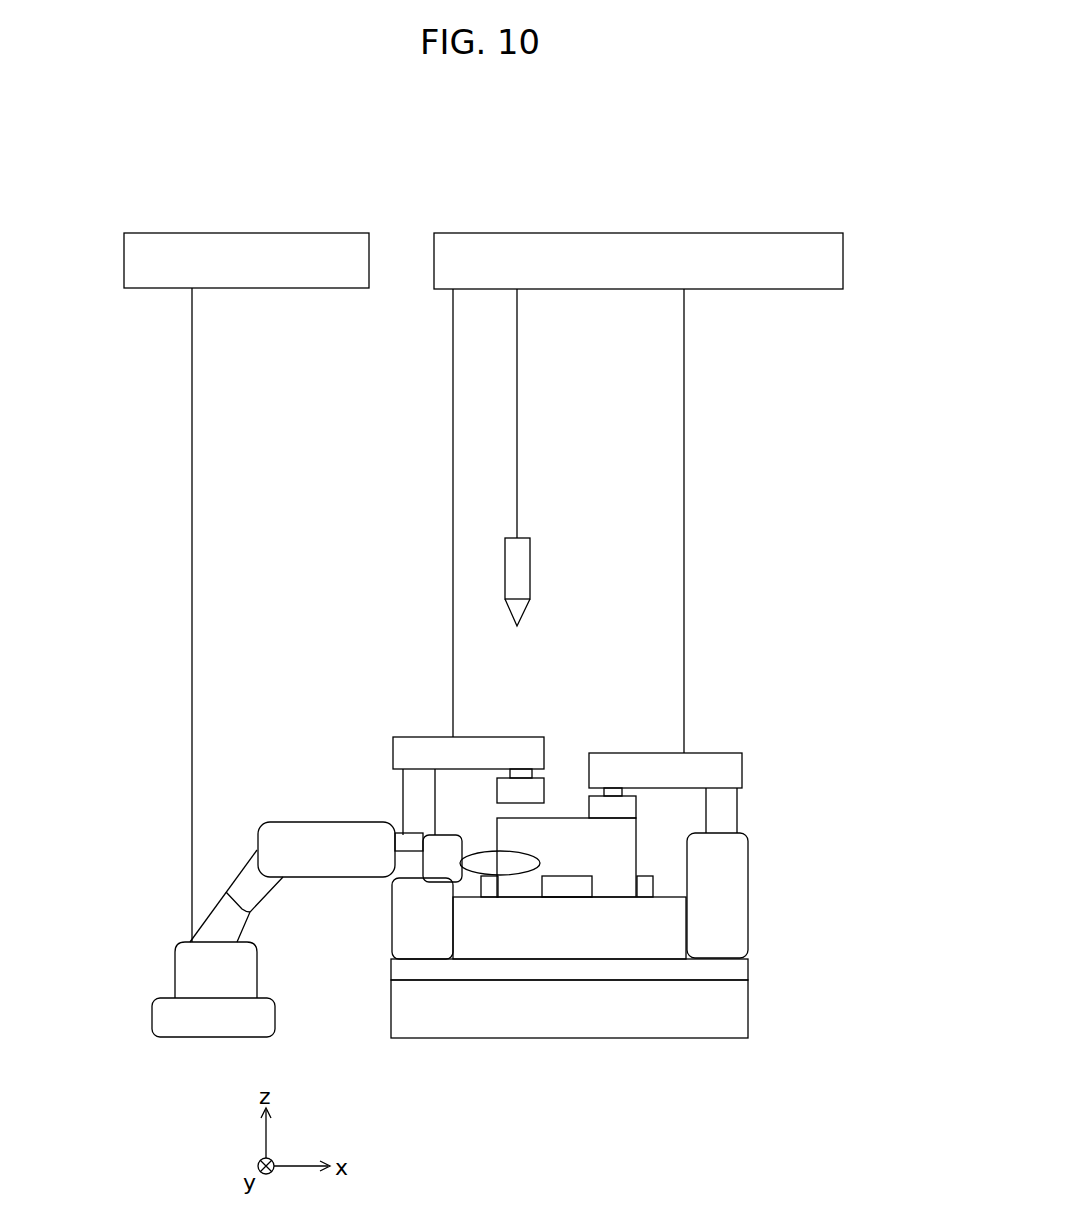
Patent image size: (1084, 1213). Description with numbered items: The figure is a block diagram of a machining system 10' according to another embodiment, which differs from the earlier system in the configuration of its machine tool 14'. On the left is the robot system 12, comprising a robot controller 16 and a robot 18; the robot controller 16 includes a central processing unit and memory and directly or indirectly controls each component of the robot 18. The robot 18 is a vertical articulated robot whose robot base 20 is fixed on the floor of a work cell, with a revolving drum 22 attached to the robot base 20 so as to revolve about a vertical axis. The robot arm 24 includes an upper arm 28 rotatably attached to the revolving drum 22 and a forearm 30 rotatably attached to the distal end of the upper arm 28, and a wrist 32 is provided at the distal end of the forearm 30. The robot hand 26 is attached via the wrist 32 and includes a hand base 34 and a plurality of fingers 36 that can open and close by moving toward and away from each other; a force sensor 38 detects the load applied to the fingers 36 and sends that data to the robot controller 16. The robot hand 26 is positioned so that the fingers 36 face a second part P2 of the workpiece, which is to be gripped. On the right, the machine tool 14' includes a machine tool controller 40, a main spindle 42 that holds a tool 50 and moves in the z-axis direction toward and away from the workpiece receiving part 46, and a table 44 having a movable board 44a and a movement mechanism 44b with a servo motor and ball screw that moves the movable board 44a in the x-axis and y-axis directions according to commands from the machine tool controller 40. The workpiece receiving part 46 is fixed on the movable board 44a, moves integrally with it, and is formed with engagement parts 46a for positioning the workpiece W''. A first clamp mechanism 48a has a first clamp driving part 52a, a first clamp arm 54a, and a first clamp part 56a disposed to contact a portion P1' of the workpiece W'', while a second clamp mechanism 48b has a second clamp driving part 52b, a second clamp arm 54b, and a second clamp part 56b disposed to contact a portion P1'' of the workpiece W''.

The machining system 10' is at (755, 157).
The robot system 12 is at (180, 208).
The machine tool 14' is at (590, 657).
The robot controller 16 is at (262, 233).
The robot 18 is at (308, 715).
The robot base 20 is at (175, 1033).
The revolving drum 22 is at (190, 968).
The robot arm 24 is at (287, 768).
The robot hand 26 is at (368, 898).
The upper arm 28 is at (212, 925).
The forearm 30 is at (283, 847).
The wrist 32 is at (407, 863).
The hand base 34 is at (433, 847).
The fingers 36 is at (430, 975).
The force sensor 38 is at (467, 867).
The machine tool controller 40 is at (557, 233).
The main spindle 42 is at (520, 563).
The table 44 is at (612, 1059).
The movable board 44a is at (726, 970).
The movement mechanism 44b is at (726, 1010).
The workpiece receiving part 46 is at (508, 948).
The engagement parts 46a is at (490, 890).
The first clamp mechanism 48a is at (740, 733).
The second clamp mechanism 48b is at (382, 722).
The tool 50 is at (523, 617).
The first clamp driving part 52a is at (726, 922).
The second clamp driving part 52b is at (397, 945).
The first clamp arm 54a is at (732, 771).
The second clamp arm 54b is at (402, 750).
The first clamp part 56a is at (628, 805).
The second clamp part 56b is at (505, 787).
The workpiece W'' is at (661, 857).
The portion of the workpiece P1'' is at (556, 747).
The portion of the workpiece P1' is at (614, 749).
The second part P2 is at (517, 880).